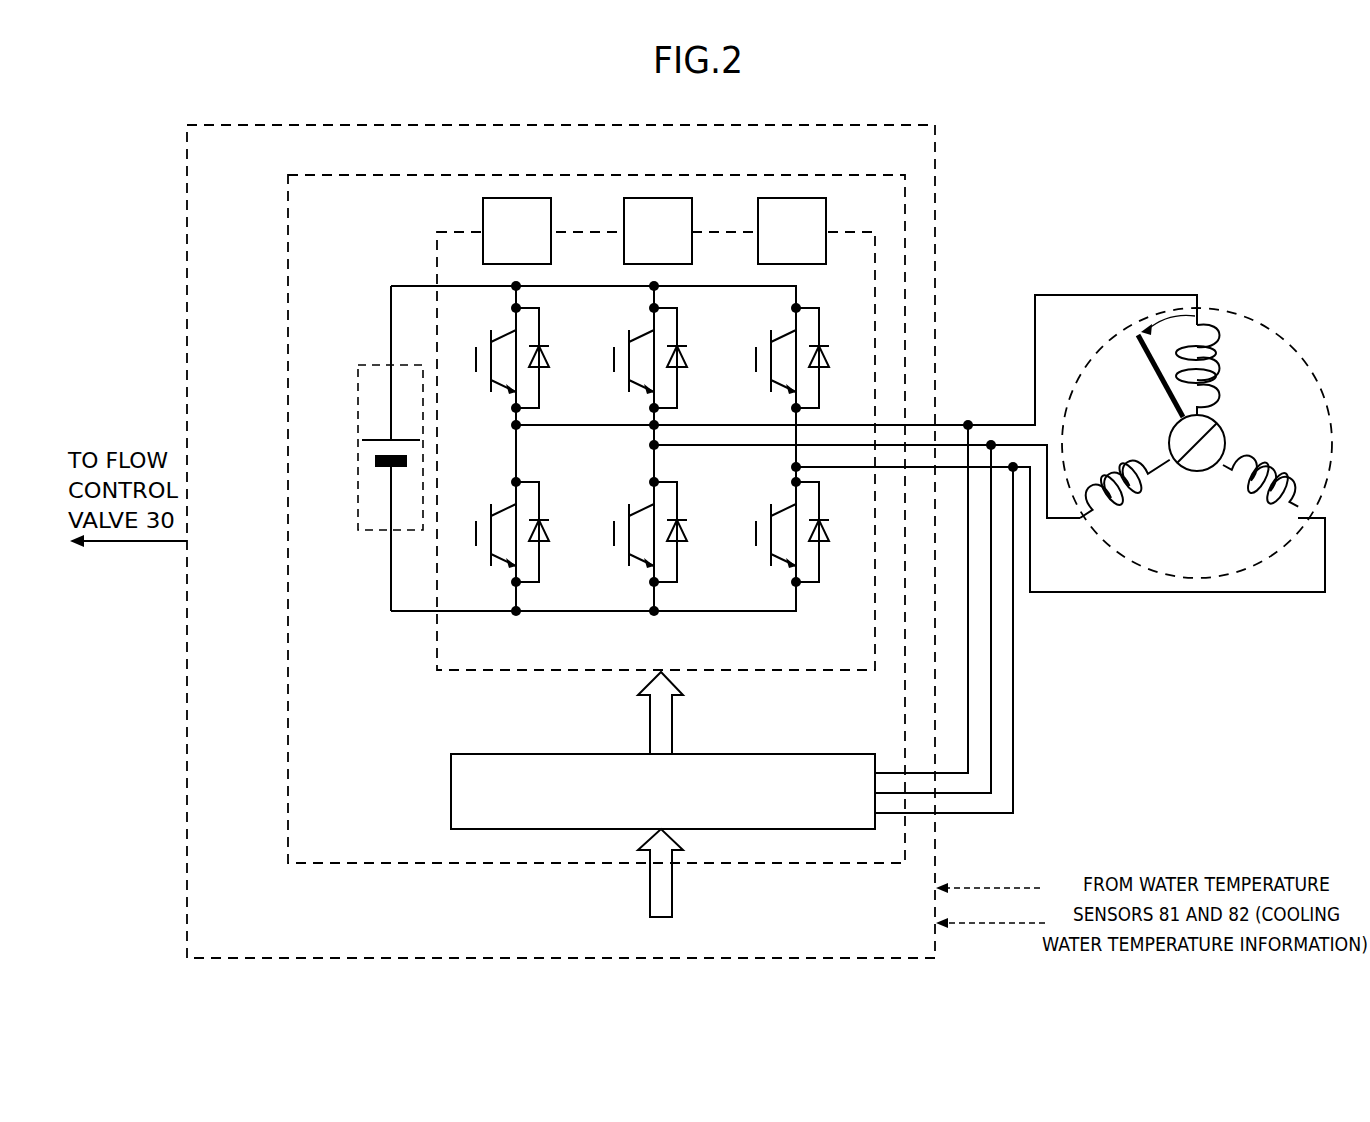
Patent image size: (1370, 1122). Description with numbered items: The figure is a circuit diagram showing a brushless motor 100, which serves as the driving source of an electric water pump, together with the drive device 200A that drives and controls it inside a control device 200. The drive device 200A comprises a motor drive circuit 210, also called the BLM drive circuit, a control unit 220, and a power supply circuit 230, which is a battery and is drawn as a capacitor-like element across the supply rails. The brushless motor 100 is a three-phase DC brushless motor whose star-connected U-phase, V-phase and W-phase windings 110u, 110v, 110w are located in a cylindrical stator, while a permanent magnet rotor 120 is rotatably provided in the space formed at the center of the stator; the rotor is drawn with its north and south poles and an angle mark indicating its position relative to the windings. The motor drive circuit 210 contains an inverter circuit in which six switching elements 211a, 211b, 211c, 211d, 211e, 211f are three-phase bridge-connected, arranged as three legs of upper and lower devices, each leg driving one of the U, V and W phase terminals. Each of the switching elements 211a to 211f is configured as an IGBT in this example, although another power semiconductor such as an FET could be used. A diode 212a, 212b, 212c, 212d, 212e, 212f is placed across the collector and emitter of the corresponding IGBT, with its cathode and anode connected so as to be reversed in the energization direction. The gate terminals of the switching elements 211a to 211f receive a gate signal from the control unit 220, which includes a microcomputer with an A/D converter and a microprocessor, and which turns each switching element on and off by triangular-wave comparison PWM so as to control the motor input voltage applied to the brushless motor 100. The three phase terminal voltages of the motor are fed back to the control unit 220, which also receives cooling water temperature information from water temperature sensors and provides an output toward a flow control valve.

The brushless motor 100 is at (1197, 410).
The U-phase winding 110u is at (1222, 322).
The V-phase winding 110v is at (1143, 451).
The W-phase winding 110w is at (1262, 497).
The permanent magnet rotor 120 is at (1195, 475).
The control device 200 is at (187, 253).
The drive device 200A is at (288, 253).
The motor drive circuit 210 is at (835, 507).
The switching element 211a is at (476, 358).
The switching element 211b is at (476, 532).
The switching element 211c is at (614, 358).
The switching element 211d is at (614, 532).
The switching element 211e is at (754, 358).
The switching element 211f is at (754, 532).
The diode 212a is at (550, 357).
The diode 212b is at (550, 531).
The diode 212c is at (688, 357).
The diode 212d is at (688, 531).
The diode 212e is at (830, 357).
The diode 212f is at (830, 531).
The control unit 220 is at (451, 790).
The power supply circuit 230 is at (358, 525).